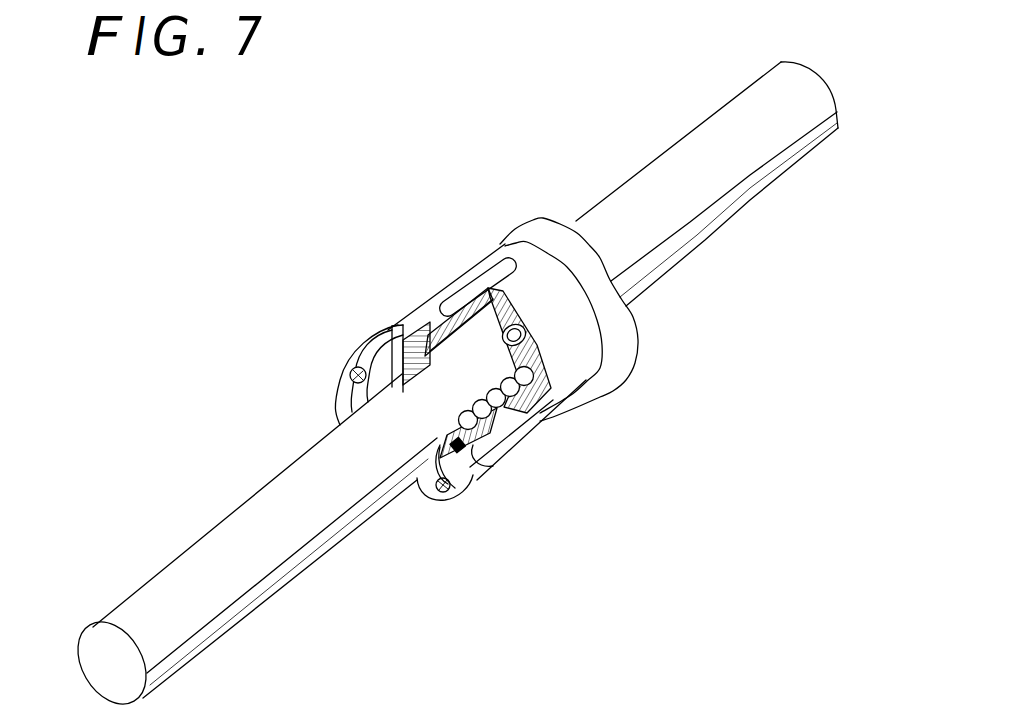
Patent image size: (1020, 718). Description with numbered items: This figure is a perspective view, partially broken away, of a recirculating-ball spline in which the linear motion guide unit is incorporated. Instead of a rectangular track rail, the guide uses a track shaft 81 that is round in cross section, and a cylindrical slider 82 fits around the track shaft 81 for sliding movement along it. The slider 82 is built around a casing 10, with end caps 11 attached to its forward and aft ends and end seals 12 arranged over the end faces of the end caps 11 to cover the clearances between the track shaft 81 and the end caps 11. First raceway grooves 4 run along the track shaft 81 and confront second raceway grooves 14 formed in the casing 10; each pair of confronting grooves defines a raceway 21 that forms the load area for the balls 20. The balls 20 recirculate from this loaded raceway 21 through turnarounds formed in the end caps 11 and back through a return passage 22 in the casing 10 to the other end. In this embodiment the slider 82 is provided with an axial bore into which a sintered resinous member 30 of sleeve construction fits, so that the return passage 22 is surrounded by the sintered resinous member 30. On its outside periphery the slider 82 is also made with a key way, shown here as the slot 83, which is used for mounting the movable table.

The first raceway groove 4 is at (318, 540).
The track shaft 81 is at (262, 484).
The casing 10 is at (540, 404).
The end cap 11 is at (604, 317).
The end seal 12 is at (607, 269).
The second raceway groove 14 is at (557, 393).
The ball 20 is at (503, 428).
The raceway 21 is at (460, 480).
The return passage 22 is at (518, 322).
The sintered resinous member 30 is at (512, 324).
The cylindrical slider 82 is at (400, 290).
The lug slot 83 is at (486, 290).